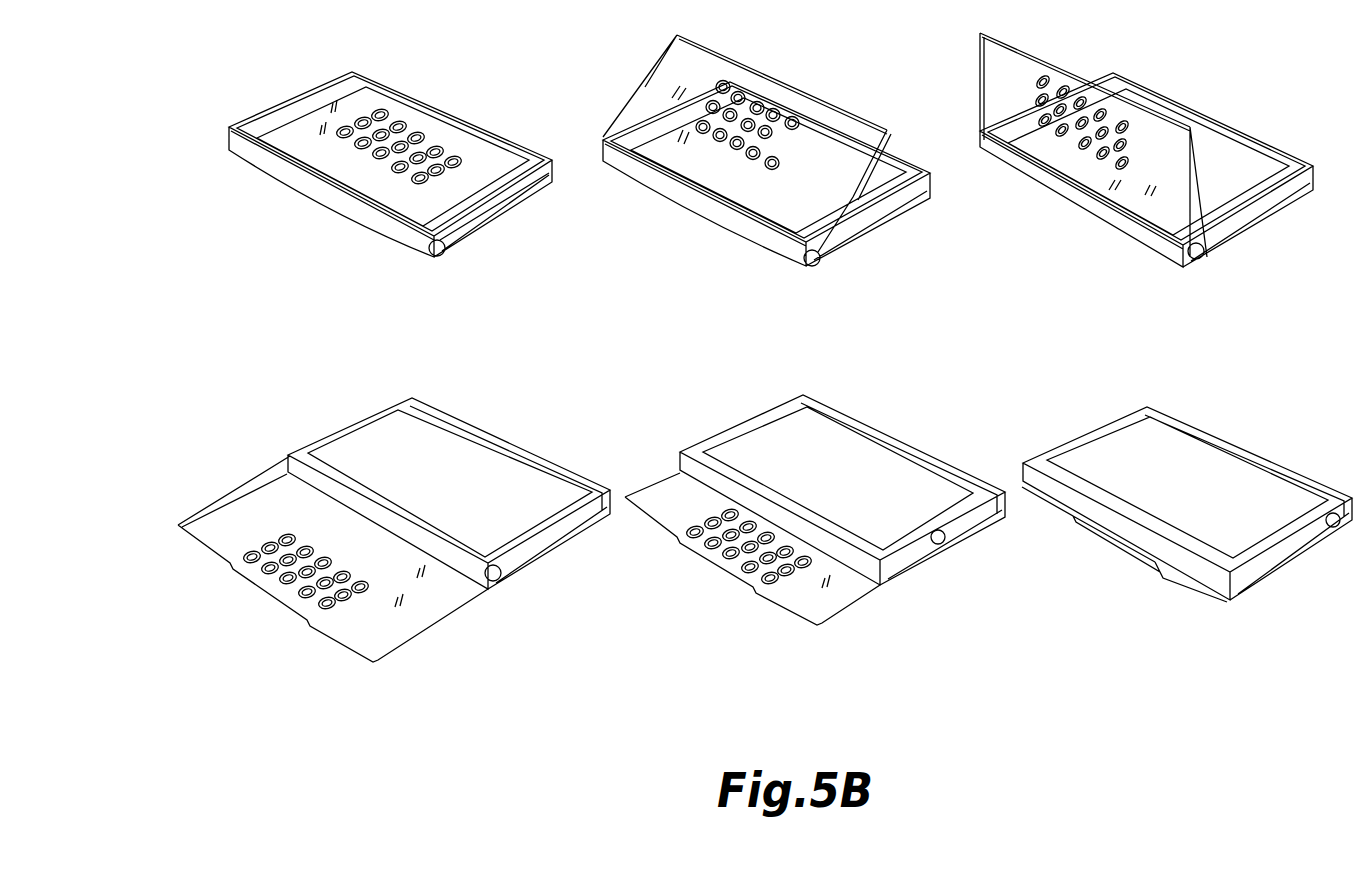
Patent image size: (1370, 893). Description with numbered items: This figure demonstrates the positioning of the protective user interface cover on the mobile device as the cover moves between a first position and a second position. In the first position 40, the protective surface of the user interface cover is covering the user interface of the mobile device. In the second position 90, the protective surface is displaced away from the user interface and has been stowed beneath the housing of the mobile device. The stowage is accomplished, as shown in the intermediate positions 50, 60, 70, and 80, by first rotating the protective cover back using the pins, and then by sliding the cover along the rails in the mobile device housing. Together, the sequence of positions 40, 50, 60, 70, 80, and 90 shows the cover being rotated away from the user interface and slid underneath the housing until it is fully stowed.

The first position 40 is at (377, 230).
The intermediate position 50 is at (757, 233).
The intermediate position 60 is at (1145, 237).
The intermediate position 70 is at (340, 643).
The intermediate position 80 is at (782, 603).
The second position 90 is at (1192, 585).